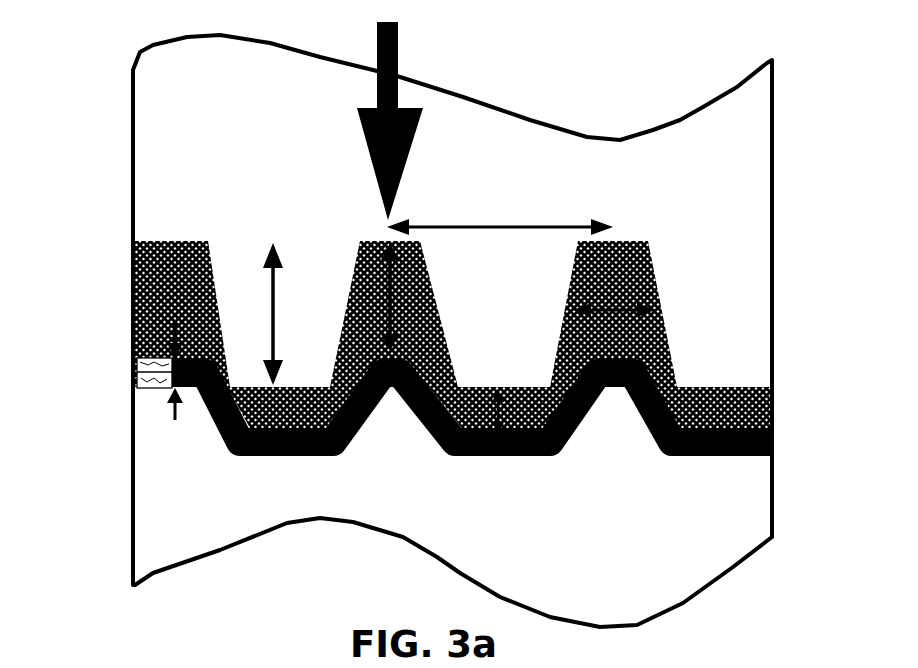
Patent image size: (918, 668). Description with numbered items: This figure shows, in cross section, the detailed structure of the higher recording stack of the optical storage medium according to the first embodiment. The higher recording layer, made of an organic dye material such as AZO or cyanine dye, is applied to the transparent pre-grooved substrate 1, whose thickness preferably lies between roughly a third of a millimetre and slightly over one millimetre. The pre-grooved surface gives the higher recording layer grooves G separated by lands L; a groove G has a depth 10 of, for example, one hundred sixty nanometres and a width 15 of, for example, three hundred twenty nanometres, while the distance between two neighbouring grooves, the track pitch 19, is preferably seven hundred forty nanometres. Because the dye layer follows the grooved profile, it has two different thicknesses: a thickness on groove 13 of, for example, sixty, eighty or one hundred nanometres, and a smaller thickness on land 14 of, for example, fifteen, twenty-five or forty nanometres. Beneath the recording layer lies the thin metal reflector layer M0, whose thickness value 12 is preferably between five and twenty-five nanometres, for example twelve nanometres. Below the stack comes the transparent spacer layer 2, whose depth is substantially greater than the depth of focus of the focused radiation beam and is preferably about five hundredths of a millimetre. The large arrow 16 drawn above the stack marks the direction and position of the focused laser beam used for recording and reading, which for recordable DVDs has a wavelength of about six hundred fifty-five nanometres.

The substrate 1 is at (203, 145).
The spacer layer 2 is at (755, 500).
The depth 10 is at (270, 315).
The thickness value 12 is at (140, 372).
The thickness on groove 13 is at (427, 283).
The thickness on land 14 is at (537, 403).
The width 15 is at (650, 263).
The irradiation direction arrow 16 is at (400, 35).
The track pitch 19 is at (487, 227).
The groove G is at (183, 242).
The land L is at (310, 387).
The thin metal reflector layer M0 is at (193, 388).